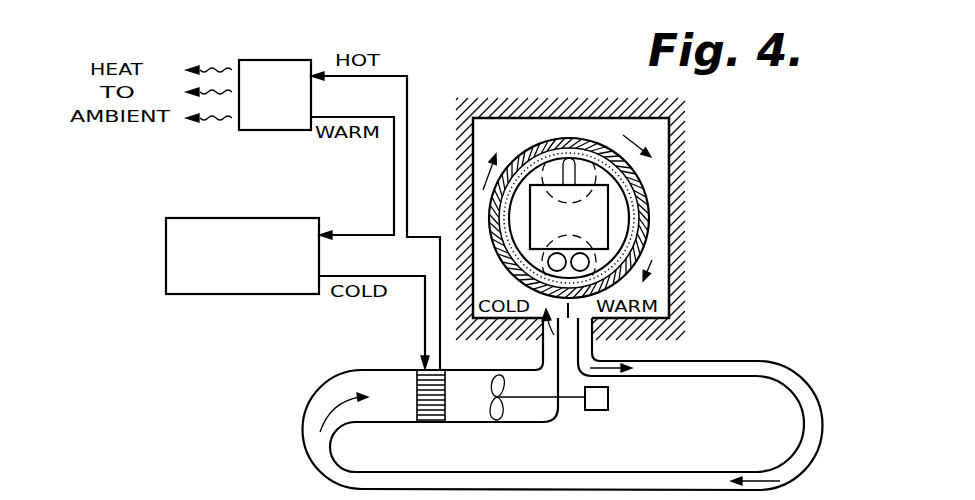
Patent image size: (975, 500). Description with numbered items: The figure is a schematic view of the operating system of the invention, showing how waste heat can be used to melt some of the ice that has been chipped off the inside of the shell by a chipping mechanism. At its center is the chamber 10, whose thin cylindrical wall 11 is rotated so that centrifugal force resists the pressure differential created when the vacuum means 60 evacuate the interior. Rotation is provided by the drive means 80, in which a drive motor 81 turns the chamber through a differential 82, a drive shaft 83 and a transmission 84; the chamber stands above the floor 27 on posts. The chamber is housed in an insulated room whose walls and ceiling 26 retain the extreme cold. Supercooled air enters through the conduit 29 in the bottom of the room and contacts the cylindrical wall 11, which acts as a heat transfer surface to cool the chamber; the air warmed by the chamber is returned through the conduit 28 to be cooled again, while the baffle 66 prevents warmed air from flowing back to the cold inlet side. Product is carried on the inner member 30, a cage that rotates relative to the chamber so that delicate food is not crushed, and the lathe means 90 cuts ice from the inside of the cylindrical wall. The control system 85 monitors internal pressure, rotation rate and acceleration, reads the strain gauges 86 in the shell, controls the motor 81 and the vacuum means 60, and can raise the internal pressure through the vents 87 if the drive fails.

The chamber 10 is at (530, 130).
The cylindrical wall 11 is at (640, 175).
The walls and ceiling 26 is at (682, 116).
The floor 27 is at (486, 327).
The conduit 28 is at (582, 344).
The conduit 29 is at (553, 345).
The inner member 30 is at (603, 216).
The vacuum means 60 is at (590, 262).
The baffle 66 is at (569, 305).
The drive means 80 is at (195, 265).
The drive motor 81 is at (435, 418).
The differential 82 is at (408, 92).
The drive shaft 83 is at (266, 61).
The transmission 84 is at (394, 170).
The control system 85 is at (412, 283).
The strain gauges 86 is at (610, 398).
The vents 87 is at (503, 412).
The lathe means 90 is at (584, 165).